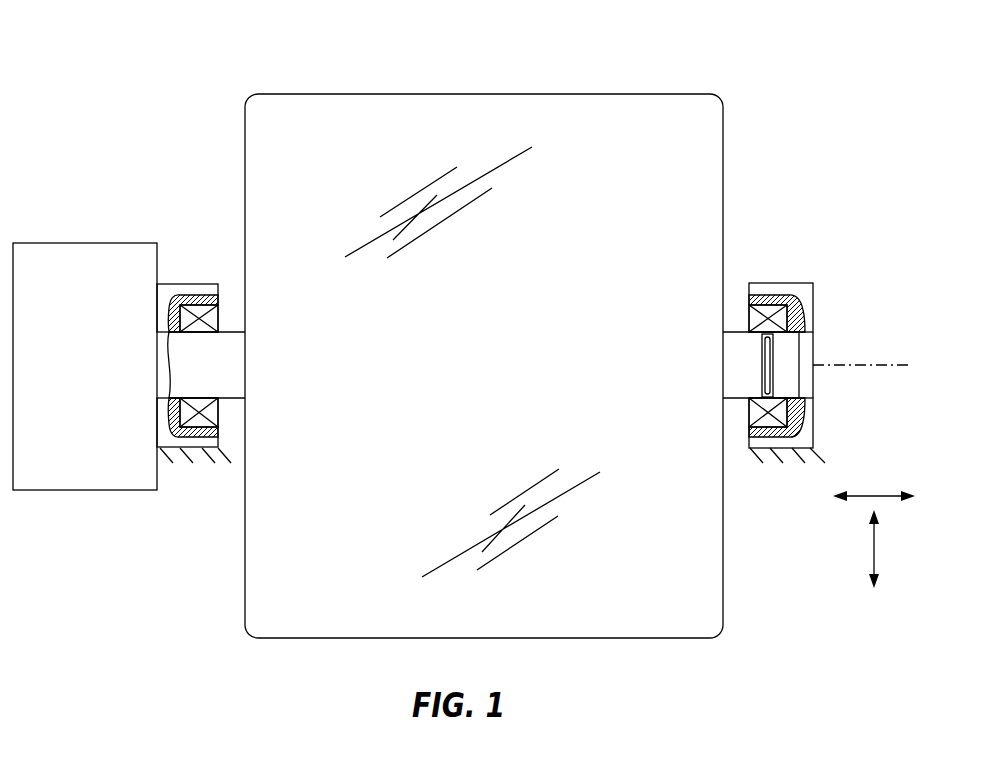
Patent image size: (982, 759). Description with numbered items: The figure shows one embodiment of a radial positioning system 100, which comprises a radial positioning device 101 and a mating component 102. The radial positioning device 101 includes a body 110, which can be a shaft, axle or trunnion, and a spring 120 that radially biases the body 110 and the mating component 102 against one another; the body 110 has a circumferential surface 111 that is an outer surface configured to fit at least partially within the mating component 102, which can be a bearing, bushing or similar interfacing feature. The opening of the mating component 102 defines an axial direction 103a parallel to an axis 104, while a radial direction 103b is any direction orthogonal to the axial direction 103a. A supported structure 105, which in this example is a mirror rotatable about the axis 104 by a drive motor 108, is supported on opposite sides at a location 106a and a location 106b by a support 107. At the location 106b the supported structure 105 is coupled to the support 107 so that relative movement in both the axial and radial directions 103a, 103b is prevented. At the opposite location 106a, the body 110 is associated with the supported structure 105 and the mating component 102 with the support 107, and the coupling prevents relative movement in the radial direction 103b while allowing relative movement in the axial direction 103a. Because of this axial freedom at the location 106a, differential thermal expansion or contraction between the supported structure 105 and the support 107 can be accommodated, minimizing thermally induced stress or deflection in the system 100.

The radial positioning system 100 is at (384, 38).
The radial positioning device 101 is at (828, 349).
The mating component 102 is at (736, 308).
The axial direction 103a is at (877, 493).
The radial direction 103b is at (871, 548).
The axis 104 is at (863, 367).
The supported structure 105 is at (620, 108).
The location 106a is at (786, 268).
The location 106b is at (193, 268).
The support 107 is at (192, 442).
The drive motor 108 is at (75, 243).
The body 110 is at (738, 383).
The circumferential surface 111 is at (786, 376).
The spring 120 is at (788, 385).